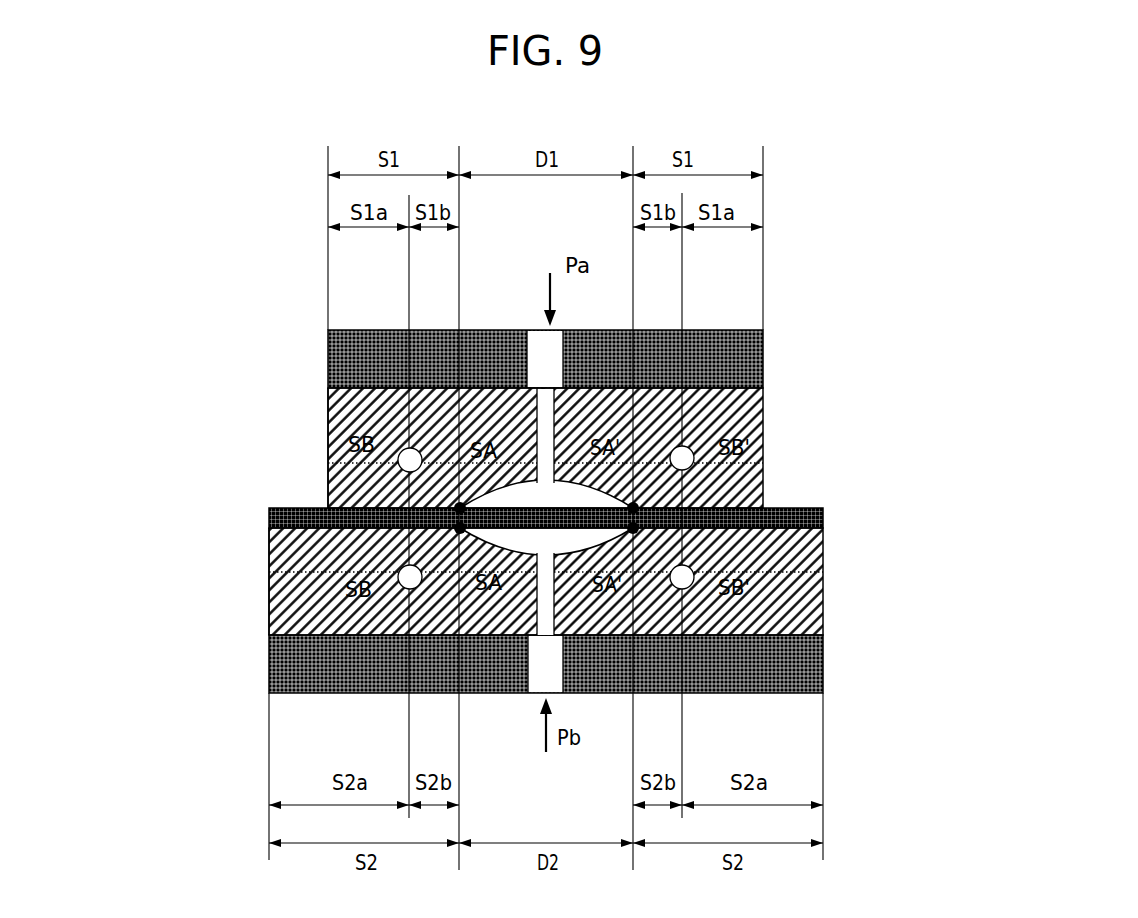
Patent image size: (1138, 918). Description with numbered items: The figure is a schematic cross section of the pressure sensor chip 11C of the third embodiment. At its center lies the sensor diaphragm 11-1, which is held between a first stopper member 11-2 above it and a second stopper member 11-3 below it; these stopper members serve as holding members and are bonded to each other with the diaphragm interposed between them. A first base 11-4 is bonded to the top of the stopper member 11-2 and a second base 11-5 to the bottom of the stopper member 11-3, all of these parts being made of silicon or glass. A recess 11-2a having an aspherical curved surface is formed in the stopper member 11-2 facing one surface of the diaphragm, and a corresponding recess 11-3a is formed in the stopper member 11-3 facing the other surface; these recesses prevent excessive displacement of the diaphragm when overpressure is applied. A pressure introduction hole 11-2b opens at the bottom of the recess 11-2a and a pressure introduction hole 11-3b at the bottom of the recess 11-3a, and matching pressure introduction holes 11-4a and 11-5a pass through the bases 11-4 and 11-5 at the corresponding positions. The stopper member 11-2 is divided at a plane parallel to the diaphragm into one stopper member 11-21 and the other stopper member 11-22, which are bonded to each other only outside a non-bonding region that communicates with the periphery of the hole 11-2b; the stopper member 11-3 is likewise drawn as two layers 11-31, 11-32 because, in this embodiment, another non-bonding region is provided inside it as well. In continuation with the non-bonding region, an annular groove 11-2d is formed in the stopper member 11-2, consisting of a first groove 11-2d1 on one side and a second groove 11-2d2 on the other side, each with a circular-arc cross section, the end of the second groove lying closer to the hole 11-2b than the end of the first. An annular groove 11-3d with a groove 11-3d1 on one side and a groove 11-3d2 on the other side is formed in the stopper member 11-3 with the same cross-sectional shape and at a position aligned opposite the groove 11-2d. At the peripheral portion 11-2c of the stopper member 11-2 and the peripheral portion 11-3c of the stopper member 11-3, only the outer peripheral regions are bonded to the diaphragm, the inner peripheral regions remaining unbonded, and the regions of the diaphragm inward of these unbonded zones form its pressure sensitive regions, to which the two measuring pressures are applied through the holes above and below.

The pressure sensor chip 11C is at (1033, 302).
The sensor diaphragm 11-1 is at (820, 512).
The first stopper member 11-2 is at (763, 413).
The one stopper member 11-21 is at (345, 415).
The other stopper member 11-22 is at (330, 488).
The recess 11-2a is at (575, 500).
The pressure introduction hole 11-2b is at (537, 455).
The peripheral portion 11-2c is at (330, 468).
The annular groove 11-2d is at (400, 448).
The first groove 11-2d1 is at (690, 447).
The second groove 11-2d2 is at (686, 472).
The second stopper member 11-3 is at (820, 587).
The lower sublayer of lower plate 11-31 is at (269, 606).
The upper sublayer of lower plate 11-32 is at (269, 548).
The recess 11-3a is at (578, 549).
The pressure introduction hole 11-3b is at (535, 574).
The peripheral portion 11-3c is at (268, 640).
The annular groove 11-3d is at (405, 590).
The groove on one side 11-3d1 is at (657, 583).
The groove on the other side 11-3d2 is at (688, 547).
The first base 11-4 is at (733, 358).
The pressure introduction hole 11-4a is at (540, 340).
The second base 11-5 is at (820, 673).
The pressure introduction hole 11-5a is at (530, 677).